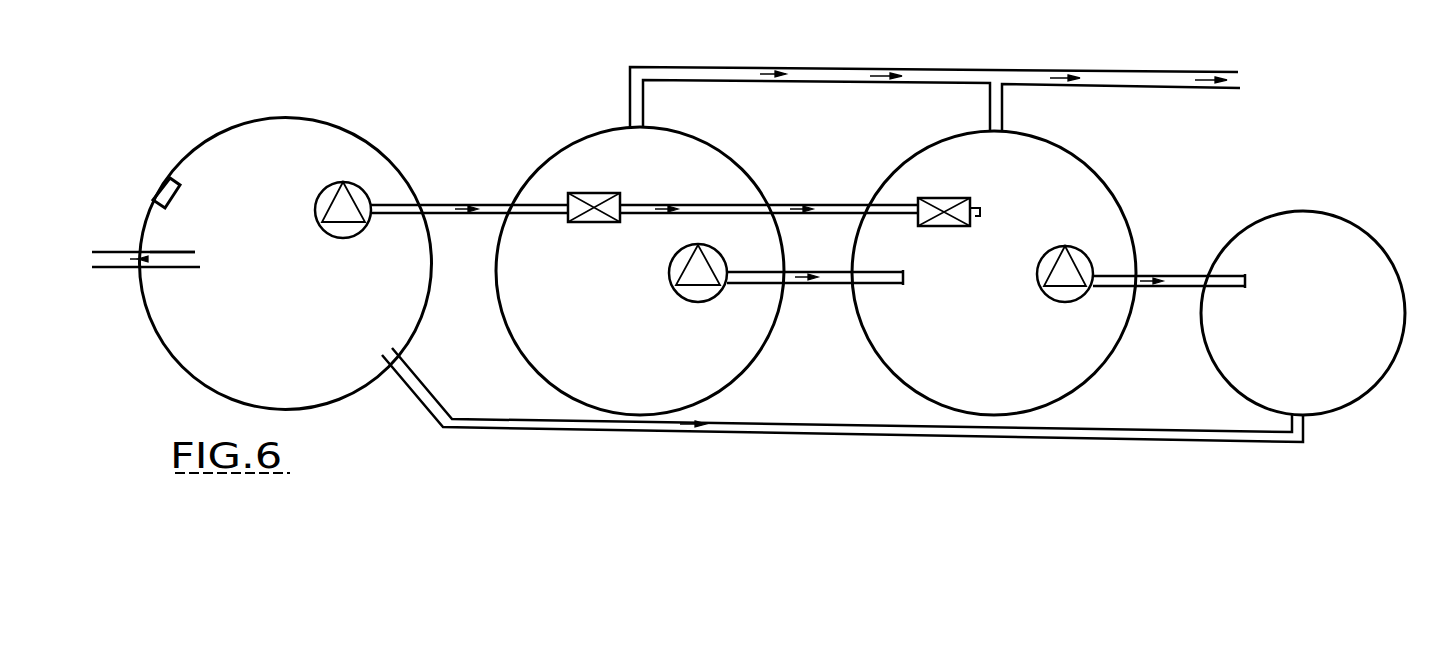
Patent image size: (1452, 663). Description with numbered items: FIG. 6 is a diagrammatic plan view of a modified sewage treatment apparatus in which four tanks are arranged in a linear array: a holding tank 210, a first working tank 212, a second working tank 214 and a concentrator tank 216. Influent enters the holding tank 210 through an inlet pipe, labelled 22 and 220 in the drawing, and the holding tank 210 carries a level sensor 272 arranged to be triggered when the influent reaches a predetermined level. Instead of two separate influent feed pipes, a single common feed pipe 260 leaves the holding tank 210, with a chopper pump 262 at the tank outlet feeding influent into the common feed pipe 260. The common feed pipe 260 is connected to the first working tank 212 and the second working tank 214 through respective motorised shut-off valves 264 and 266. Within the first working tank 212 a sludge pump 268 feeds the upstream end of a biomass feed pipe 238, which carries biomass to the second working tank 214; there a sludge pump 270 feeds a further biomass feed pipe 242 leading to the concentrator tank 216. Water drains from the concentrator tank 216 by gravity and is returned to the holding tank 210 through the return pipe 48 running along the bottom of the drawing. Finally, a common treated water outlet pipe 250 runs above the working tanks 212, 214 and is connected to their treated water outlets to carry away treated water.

The water inlet 22 is at (198, 258).
The conduit 48 is at (879, 430).
The holding tank 210 is at (333, 378).
The first working tank 212 is at (723, 372).
The second working tank 214 is at (1087, 370).
The concentrator tank 216 is at (1362, 385).
The inlet conduit 220 is at (113, 262).
The biomass feed pipe 238 is at (821, 284).
The further biomass feed pipe 242 is at (1168, 274).
The common treated water outlet pipe 250 is at (1100, 77).
The common feed pipe 260 is at (469, 204).
The chopper pump 262 is at (357, 197).
The motorised shut-off valve 264 is at (596, 218).
The motorised shut-off valve 266 is at (954, 218).
The sludge pump 268 is at (667, 273).
The sludge pump 270 is at (1037, 277).
The level sensor 272 is at (162, 178).